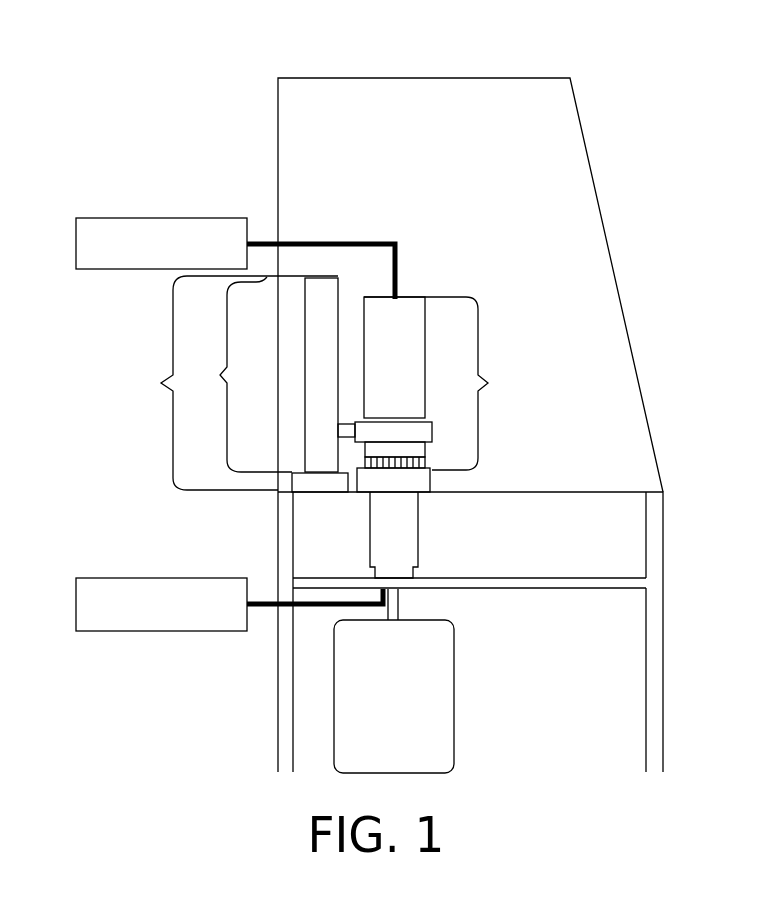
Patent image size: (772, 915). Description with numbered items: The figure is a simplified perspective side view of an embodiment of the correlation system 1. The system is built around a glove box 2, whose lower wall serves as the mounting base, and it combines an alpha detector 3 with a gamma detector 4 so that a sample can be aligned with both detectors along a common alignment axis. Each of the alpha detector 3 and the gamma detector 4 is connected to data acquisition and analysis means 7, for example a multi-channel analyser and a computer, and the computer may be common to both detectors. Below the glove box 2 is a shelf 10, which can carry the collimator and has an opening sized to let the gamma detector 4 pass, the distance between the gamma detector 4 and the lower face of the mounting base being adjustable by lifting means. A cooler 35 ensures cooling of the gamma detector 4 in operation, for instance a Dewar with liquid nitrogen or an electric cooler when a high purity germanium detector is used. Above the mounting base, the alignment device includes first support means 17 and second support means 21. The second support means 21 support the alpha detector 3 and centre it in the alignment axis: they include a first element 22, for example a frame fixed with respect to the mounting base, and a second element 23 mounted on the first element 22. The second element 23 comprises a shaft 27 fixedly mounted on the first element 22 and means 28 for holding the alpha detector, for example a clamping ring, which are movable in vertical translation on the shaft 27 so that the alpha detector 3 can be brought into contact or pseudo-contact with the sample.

The correlation system 1 is at (614, 82).
The glove box 2 is at (597, 190).
The alpha detector 3 is at (436, 383).
The gamma detector 4 is at (405, 532).
The data acquisition and analysis means 7 is at (160, 230).
The shelf 10 is at (543, 589).
The first support means 17 is at (420, 481).
The second support means 21 is at (231, 383).
The first element 22 is at (327, 484).
The second element 23 is at (236, 374).
The shaft 27 is at (318, 355).
The means for holding the alpha detector 28 is at (407, 365).
The cooler 35 is at (440, 690).